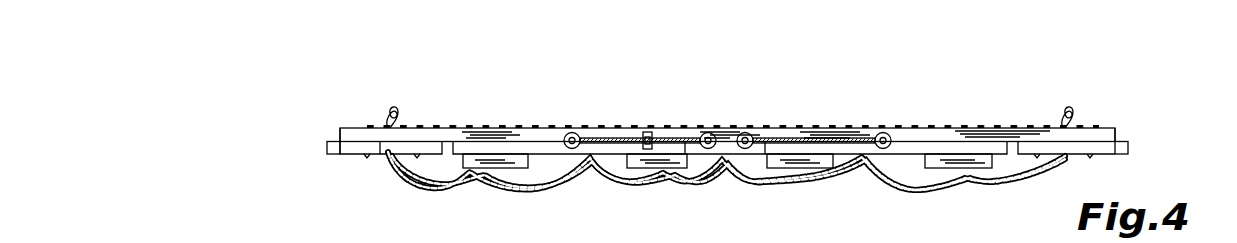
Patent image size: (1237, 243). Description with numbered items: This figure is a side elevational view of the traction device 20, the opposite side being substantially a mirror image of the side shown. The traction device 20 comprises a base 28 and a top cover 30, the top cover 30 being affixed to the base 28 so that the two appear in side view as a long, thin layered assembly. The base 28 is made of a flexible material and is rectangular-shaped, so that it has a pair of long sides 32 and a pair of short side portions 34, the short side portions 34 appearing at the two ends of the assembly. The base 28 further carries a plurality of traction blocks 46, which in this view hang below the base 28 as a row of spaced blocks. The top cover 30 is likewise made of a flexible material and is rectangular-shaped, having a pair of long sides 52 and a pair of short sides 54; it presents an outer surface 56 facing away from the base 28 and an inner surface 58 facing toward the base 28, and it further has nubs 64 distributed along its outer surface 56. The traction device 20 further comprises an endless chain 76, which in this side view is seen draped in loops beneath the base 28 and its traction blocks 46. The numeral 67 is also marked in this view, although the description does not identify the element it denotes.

The traction device 20 is at (511, 114).
The base 28 is at (483, 141).
The top cover 30 is at (599, 131).
The long sides 32 is at (904, 142).
The short side portions 34 is at (322, 150).
The traction blocks 46 is at (922, 162).
The long sides 52 is at (758, 131).
The short sides 54 is at (339, 128).
The outer surface 56 is at (633, 128).
The inner surface 58 is at (375, 153).
The nubs 64 is at (790, 128).
The link 67 is at (700, 237).
The endless chain 76 is at (630, 183).